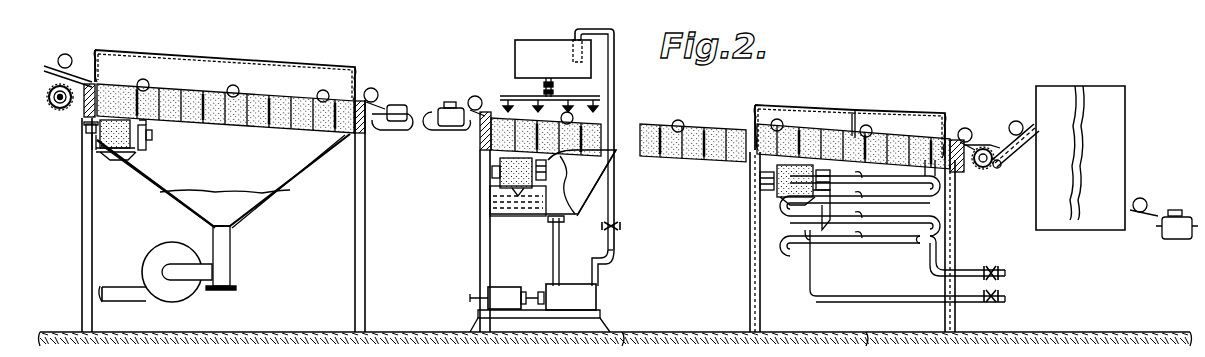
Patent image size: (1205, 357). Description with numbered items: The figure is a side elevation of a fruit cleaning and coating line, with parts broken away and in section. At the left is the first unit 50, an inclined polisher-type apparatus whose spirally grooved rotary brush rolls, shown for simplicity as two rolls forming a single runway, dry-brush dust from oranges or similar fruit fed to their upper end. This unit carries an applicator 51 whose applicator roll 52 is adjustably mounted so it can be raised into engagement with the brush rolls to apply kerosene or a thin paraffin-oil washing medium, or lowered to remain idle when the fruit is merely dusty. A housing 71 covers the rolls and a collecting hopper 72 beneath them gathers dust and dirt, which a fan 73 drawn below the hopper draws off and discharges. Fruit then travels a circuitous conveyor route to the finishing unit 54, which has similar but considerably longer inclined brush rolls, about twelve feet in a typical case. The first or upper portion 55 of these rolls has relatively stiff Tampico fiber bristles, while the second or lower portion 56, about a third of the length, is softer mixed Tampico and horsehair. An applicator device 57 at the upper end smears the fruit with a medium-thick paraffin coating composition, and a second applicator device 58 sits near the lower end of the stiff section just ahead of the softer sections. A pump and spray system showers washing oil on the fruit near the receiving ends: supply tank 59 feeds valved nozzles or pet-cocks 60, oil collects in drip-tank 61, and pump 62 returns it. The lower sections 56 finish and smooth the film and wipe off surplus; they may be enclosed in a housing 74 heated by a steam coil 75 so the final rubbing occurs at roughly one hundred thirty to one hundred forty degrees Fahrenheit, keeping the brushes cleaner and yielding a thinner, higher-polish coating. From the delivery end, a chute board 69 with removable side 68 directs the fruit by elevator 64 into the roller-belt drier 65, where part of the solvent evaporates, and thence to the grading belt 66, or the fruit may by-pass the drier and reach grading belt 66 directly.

The first unit 50 is at (228, 174).
The housing 71 is at (283, 62).
The applicator roll 52 is at (88, 131).
The applicator 51 is at (90, 150).
The collecting hopper 72 is at (282, 176).
The blower 73 is at (156, 256).
The supply tank 59 is at (553, 68).
The valved nozzles or pet-cocks 60 is at (508, 104).
The side of chute board 68 is at (618, 98).
The first or upper portion of brush rolls 55 is at (688, 160).
The applicator device 57 is at (498, 178).
The drip-tank 61 is at (570, 200).
The pump 62 is at (590, 294).
The finishing unit 54 is at (842, 213).
The housing 74 is at (803, 112).
The second or lower portion of brush rolls 56 is at (892, 134).
The applicator device 58 is at (775, 200).
The steam coil 75 is at (822, 255).
The chute board 69 is at (983, 148).
The elevator 64 is at (1005, 130).
The drier 65 is at (1091, 100).
The grading belt 66 is at (1172, 236).